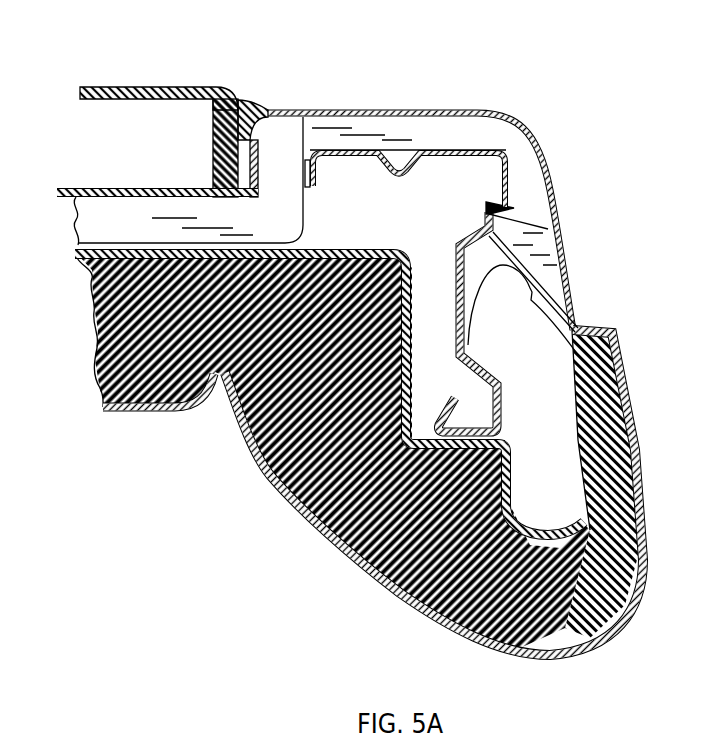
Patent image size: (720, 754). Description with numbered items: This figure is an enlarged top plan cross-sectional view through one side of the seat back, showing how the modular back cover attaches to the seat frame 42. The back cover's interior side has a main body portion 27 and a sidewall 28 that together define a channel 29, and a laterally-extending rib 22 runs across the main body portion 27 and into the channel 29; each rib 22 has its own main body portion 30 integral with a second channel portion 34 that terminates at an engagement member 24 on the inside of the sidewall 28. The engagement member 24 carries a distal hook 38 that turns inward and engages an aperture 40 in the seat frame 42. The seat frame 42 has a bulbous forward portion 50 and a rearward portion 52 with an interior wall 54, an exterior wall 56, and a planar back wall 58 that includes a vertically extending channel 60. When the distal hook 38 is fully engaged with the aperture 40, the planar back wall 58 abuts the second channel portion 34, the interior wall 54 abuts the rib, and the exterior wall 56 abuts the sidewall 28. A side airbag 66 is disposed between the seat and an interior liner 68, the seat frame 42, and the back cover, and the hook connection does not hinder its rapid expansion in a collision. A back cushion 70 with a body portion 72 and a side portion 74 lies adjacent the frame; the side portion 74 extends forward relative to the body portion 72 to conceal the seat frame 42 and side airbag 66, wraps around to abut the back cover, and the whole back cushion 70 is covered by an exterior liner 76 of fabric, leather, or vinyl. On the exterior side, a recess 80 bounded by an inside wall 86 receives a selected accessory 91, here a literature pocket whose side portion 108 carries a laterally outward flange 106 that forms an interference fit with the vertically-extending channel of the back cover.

The accessory 91 is at (143, 76).
The flange 106 is at (252, 112).
The side portion of literature pocket 108 is at (212, 155).
The recess 80 is at (117, 187).
The main body portion of rib 30 is at (110, 215).
The main body portion 27 is at (155, 210).
The laterally-extending rib 22 is at (78, 218).
The second inside wall 86 is at (243, 172).
The interior wall 54 is at (305, 168).
The planar back wall 58 is at (343, 152).
The channel 60 is at (404, 160).
The channel 29 is at (384, 128).
The second channel portion 34 is at (433, 127).
The rearward portion 52 is at (476, 150).
The exterior wall 56 is at (504, 185).
The aperture 40 is at (492, 209).
The engagement member 24 is at (532, 253).
The sidewall 28 is at (573, 270).
The side airbag 66 is at (528, 320).
The distal hook 38 is at (492, 213).
The seat frame 42 is at (456, 270).
The interior liner 68 is at (305, 252).
The body portion of back cushion 72 is at (150, 408).
The exterior liner 76 is at (260, 462).
The back cushion 70 is at (326, 534).
The side portion of back cushion 74 is at (402, 593).
The bulbous forward portion 50 is at (630, 410).